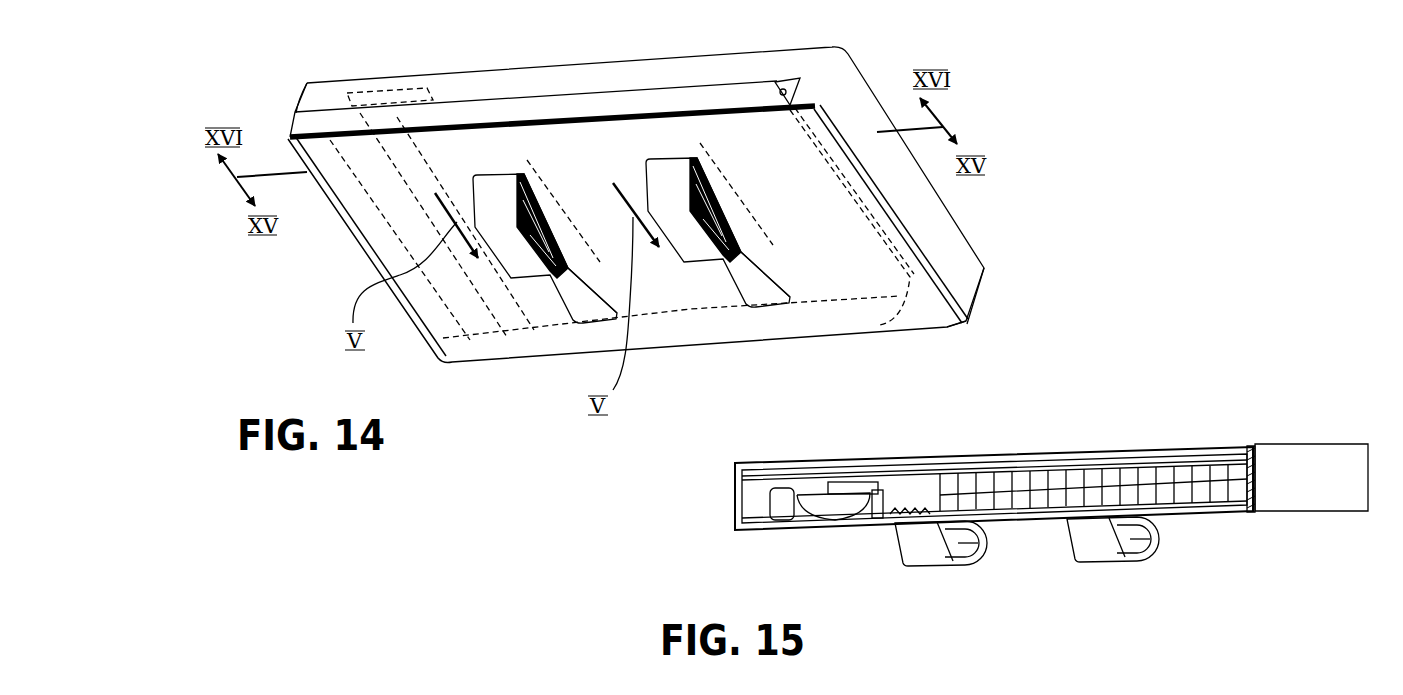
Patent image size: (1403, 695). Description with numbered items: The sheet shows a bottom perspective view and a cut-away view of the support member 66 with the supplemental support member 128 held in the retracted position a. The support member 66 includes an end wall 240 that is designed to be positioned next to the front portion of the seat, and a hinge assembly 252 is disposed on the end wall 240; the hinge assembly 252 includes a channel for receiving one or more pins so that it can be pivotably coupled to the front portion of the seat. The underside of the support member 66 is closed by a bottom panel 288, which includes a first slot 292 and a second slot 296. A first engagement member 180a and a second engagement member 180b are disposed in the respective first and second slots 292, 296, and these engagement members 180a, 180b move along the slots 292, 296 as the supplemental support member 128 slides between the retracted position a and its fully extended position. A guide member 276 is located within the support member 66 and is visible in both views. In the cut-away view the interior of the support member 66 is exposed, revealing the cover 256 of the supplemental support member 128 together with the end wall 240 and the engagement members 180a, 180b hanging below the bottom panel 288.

In FIG. 14, the support member 66 is at (850, 103).
In FIG. 15, the support member 66 is at (1300, 477).
In FIG. 14, the end wall 240 is at (740, 68).
In FIG. 15, the end wall 240 is at (1231, 443).
In FIG. 14, the hinge assembly 252 is at (545, 108).
In FIG. 14, the bottom panel 288 is at (925, 303).
In FIG. 14, the supplemental support member 128 is at (780, 157).
In FIG. 14, the guide member 276 is at (383, 132).
In FIG. 14, the retracted position a is at (944, 333).
In FIG. 14, the first engagement member 180a is at (722, 296).
In FIG. 15, the first engagement member 180a is at (1090, 543).
In FIG. 14, the second engagement member 180b is at (532, 304).
In FIG. 15, the second engagement member 180b is at (918, 550).
In FIG. 14, the first slot 292 is at (789, 311).
In FIG. 14, the second slot 296 is at (600, 324).
In FIG. 15, the cover 256 is at (1227, 493).